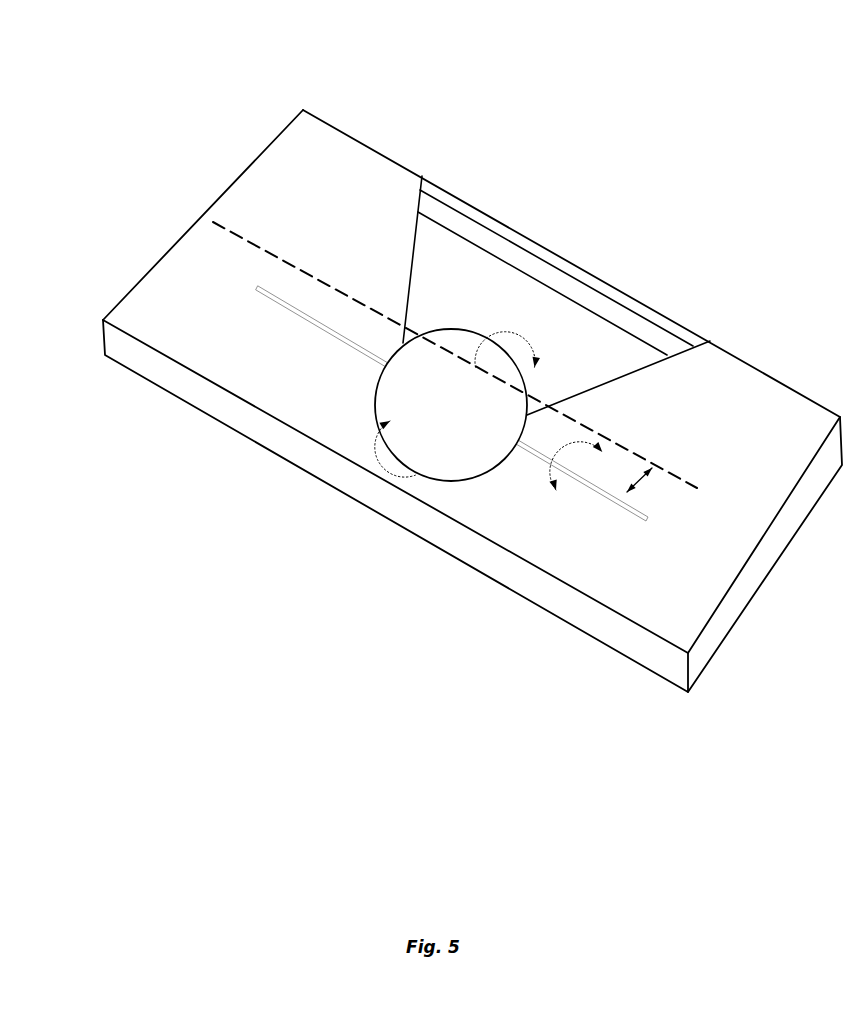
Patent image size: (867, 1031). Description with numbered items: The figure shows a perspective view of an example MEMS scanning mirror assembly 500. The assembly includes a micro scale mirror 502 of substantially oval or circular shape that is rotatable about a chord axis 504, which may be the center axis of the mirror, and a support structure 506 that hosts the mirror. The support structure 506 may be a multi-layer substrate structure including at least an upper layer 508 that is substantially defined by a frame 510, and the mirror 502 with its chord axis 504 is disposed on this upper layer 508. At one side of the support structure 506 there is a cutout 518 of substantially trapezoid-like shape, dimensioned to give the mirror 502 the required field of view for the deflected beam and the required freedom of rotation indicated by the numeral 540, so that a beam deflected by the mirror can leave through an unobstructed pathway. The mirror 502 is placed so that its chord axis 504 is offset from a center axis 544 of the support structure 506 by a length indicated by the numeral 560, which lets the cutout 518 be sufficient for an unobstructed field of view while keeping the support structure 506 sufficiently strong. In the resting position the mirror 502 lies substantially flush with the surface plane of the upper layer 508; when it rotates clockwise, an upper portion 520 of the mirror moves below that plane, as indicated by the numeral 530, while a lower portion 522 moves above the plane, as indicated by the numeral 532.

The MEMS scanning mirror assembly 500 is at (607, 67).
The micro scale mirror 502 is at (438, 425).
The chord axis 504 is at (292, 315).
The support structure 506 is at (565, 635).
The upper layer 508 is at (262, 198).
The frame 510 is at (615, 302).
The cutout 518 is at (468, 287).
The upper portion 520 is at (472, 347).
The lower portion 522 is at (457, 462).
The downward movement of upper portion 530 is at (532, 343).
The upward movement of lower portion 532 is at (375, 452).
The freedom of rotation 540 is at (558, 492).
The center axis 544 is at (693, 485).
The offset length 560 is at (645, 487).